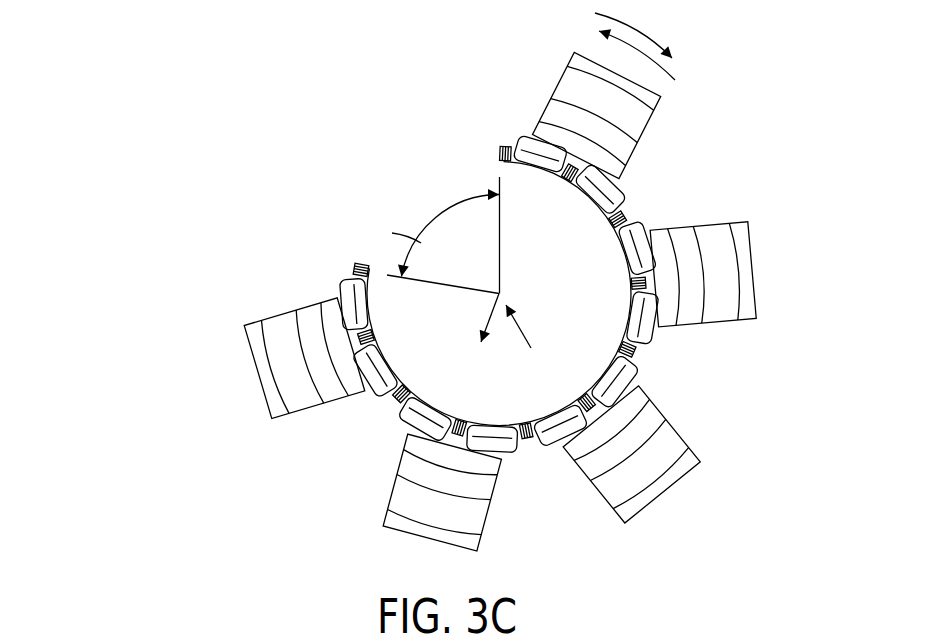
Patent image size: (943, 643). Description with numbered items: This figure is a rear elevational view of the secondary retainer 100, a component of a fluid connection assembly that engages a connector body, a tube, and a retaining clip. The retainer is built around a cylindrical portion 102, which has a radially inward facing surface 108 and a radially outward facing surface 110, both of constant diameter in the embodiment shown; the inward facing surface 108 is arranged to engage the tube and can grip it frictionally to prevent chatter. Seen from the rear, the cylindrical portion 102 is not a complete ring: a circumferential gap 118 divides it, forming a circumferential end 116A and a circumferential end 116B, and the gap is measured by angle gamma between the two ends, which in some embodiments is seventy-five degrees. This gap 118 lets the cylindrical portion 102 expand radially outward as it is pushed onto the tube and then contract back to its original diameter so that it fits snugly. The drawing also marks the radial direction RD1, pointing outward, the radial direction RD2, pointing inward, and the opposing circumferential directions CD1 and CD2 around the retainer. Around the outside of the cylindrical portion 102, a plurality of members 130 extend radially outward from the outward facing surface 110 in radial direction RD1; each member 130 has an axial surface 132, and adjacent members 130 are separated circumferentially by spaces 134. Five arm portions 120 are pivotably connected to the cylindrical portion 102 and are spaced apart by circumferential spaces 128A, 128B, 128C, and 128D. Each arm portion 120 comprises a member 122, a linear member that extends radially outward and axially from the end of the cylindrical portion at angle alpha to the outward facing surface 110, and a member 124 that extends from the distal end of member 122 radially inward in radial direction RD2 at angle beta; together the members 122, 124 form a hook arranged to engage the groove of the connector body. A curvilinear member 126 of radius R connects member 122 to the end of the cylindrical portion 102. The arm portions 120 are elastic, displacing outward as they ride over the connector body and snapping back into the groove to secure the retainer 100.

The secondary retainer 100 is at (112, 124).
The cylindrical portion 102 is at (628, 217).
The radially inward facing surface 108 is at (557, 410).
The radially outward facing surface 110 is at (527, 442).
The circumferential end 116A is at (362, 273).
The circumferential end 116B is at (501, 160).
The circumferential gap 118 is at (405, 194).
The arm portion 120 is at (427, 513).
The member 122 is at (310, 313).
The member 124 is at (288, 362).
The curvilinear member 126 is at (343, 357).
The circumferential space 128A is at (342, 466).
The circumferential space 128B is at (567, 484).
The circumferential space 128C is at (704, 410).
The circumferential space 128D is at (699, 181).
The member 130 is at (643, 222).
The axial surface 132 is at (645, 248).
The space 134 is at (659, 352).
The circumferential direction CD1 is at (650, 33).
The circumferential direction CD2 is at (616, 40).
The radial direction RD1 is at (494, 313).
The radial direction RD2 is at (518, 323).